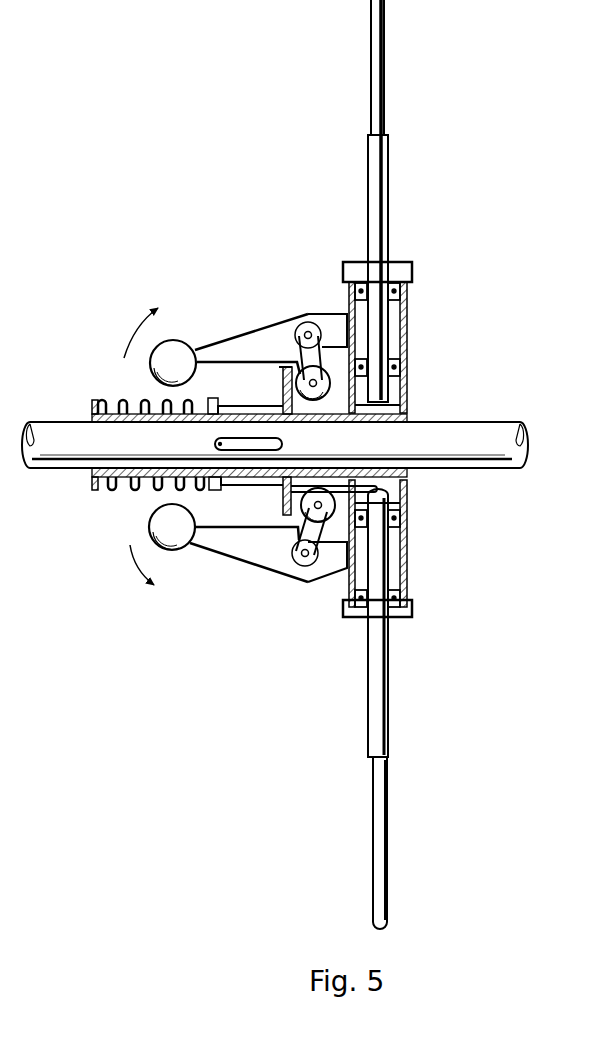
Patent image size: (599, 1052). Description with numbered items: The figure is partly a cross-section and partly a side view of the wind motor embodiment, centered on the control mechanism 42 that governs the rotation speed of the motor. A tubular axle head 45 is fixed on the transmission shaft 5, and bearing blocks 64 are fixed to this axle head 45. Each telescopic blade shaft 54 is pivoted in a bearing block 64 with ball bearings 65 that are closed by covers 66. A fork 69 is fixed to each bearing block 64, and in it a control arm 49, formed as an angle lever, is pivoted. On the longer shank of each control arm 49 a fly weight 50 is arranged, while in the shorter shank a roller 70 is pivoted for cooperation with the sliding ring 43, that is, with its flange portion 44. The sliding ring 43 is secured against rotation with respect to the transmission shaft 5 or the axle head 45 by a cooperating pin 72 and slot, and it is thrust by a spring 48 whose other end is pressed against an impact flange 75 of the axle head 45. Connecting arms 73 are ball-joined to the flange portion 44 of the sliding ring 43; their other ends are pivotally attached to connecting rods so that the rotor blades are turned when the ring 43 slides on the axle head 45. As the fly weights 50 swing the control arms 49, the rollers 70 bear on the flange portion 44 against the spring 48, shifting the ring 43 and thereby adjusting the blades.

The transmission shaft 5 is at (493, 428).
The control mechanism 42 is at (281, 303).
The sliding ring 43 is at (245, 485).
The flange portion 44 is at (287, 500).
The tubular axle head 45 is at (408, 419).
The spring 48 is at (136, 490).
The control arm 49 is at (250, 340).
The fly weight 50 is at (178, 350).
The shaft 54 is at (373, 48).
The bearing block 64 is at (408, 321).
The ball bearing 65 is at (408, 366).
The cover 66 is at (362, 272).
The fork 69 is at (330, 330).
The roller 70 is at (293, 383).
The pin 72 is at (220, 444).
The connecting arm 73 is at (378, 490).
The impact flange 75 is at (93, 486).